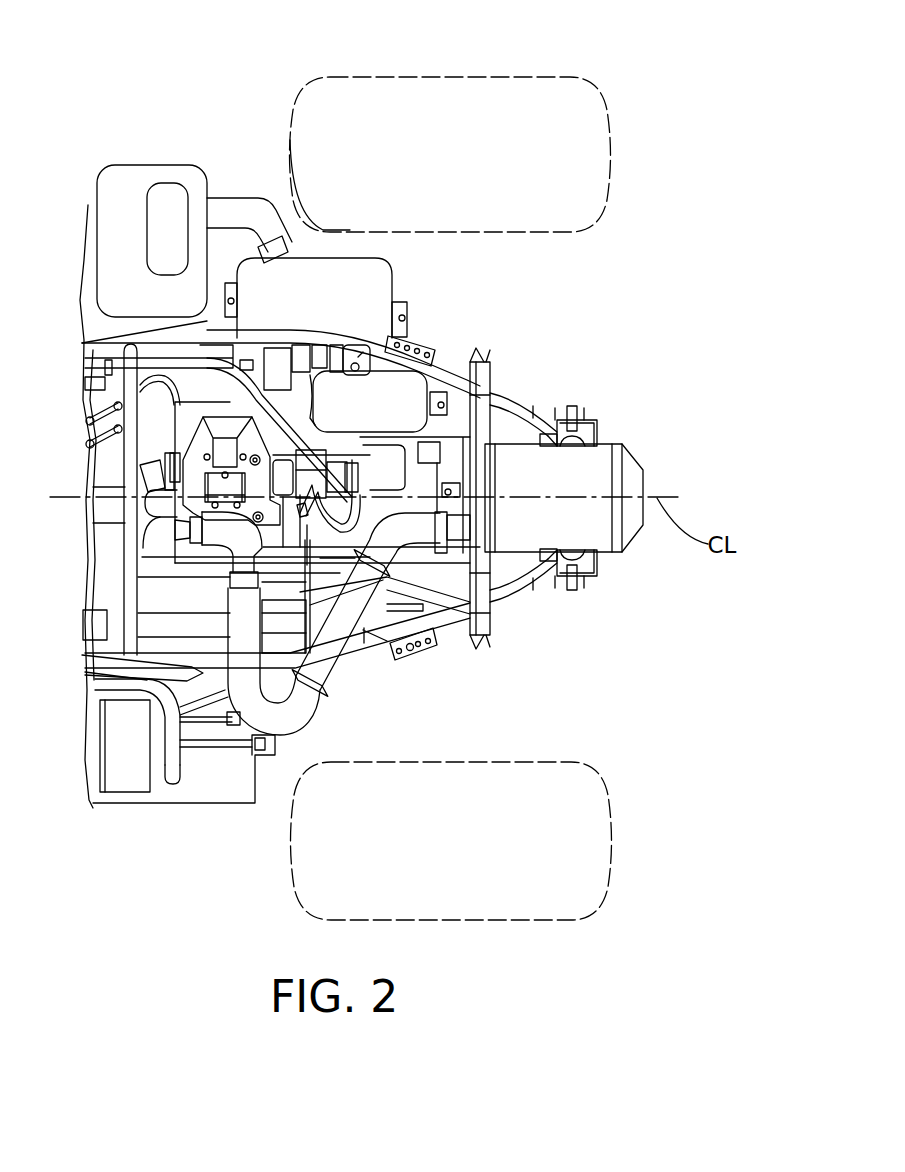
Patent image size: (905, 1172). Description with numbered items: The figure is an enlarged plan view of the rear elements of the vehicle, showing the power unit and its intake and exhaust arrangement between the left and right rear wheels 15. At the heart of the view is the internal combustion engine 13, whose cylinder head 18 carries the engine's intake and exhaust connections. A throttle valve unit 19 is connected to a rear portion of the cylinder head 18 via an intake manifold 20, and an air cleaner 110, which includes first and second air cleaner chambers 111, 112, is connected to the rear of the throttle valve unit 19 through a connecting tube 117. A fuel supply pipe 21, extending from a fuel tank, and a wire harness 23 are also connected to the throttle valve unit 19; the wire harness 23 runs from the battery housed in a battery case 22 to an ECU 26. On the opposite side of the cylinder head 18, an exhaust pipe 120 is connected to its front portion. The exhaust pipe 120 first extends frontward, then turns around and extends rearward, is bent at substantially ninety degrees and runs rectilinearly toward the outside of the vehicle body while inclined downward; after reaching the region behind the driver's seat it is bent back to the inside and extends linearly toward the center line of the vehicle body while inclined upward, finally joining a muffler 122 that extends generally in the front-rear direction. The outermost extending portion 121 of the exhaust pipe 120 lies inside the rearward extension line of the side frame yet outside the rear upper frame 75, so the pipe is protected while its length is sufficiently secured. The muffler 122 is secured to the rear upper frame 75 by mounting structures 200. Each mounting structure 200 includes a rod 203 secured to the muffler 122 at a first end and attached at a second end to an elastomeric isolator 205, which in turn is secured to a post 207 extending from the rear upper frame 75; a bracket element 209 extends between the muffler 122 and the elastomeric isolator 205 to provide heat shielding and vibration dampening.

The internal combustion engine 13 is at (228, 426).
The rear wheels 15 is at (426, 100).
The cylinder head 18 is at (290, 420).
The throttle valve unit 19 is at (322, 428).
The intake manifold 20 is at (306, 462).
The fuel supply pipe 21 is at (278, 470).
The battery case 22 is at (175, 807).
The wire harness 23 is at (377, 606).
The ECU 26 is at (221, 724).
The rear upper frame 75 is at (497, 400).
The air cleaner 110 is at (361, 340).
The first air cleaner chamber 111 is at (372, 302).
The second air cleaner chamber 112 is at (384, 392).
The connecting tube 117 is at (539, 517).
The exhaust pipe 120 is at (321, 632).
The outermost extending portion 121 is at (313, 700).
The muffler 122 is at (612, 542).
The mounting structure 200 is at (580, 499).
The rod 203 is at (598, 419).
The elastomeric isolator 205 is at (572, 405).
The post 207 is at (563, 406).
The bracket element 209 is at (588, 412).